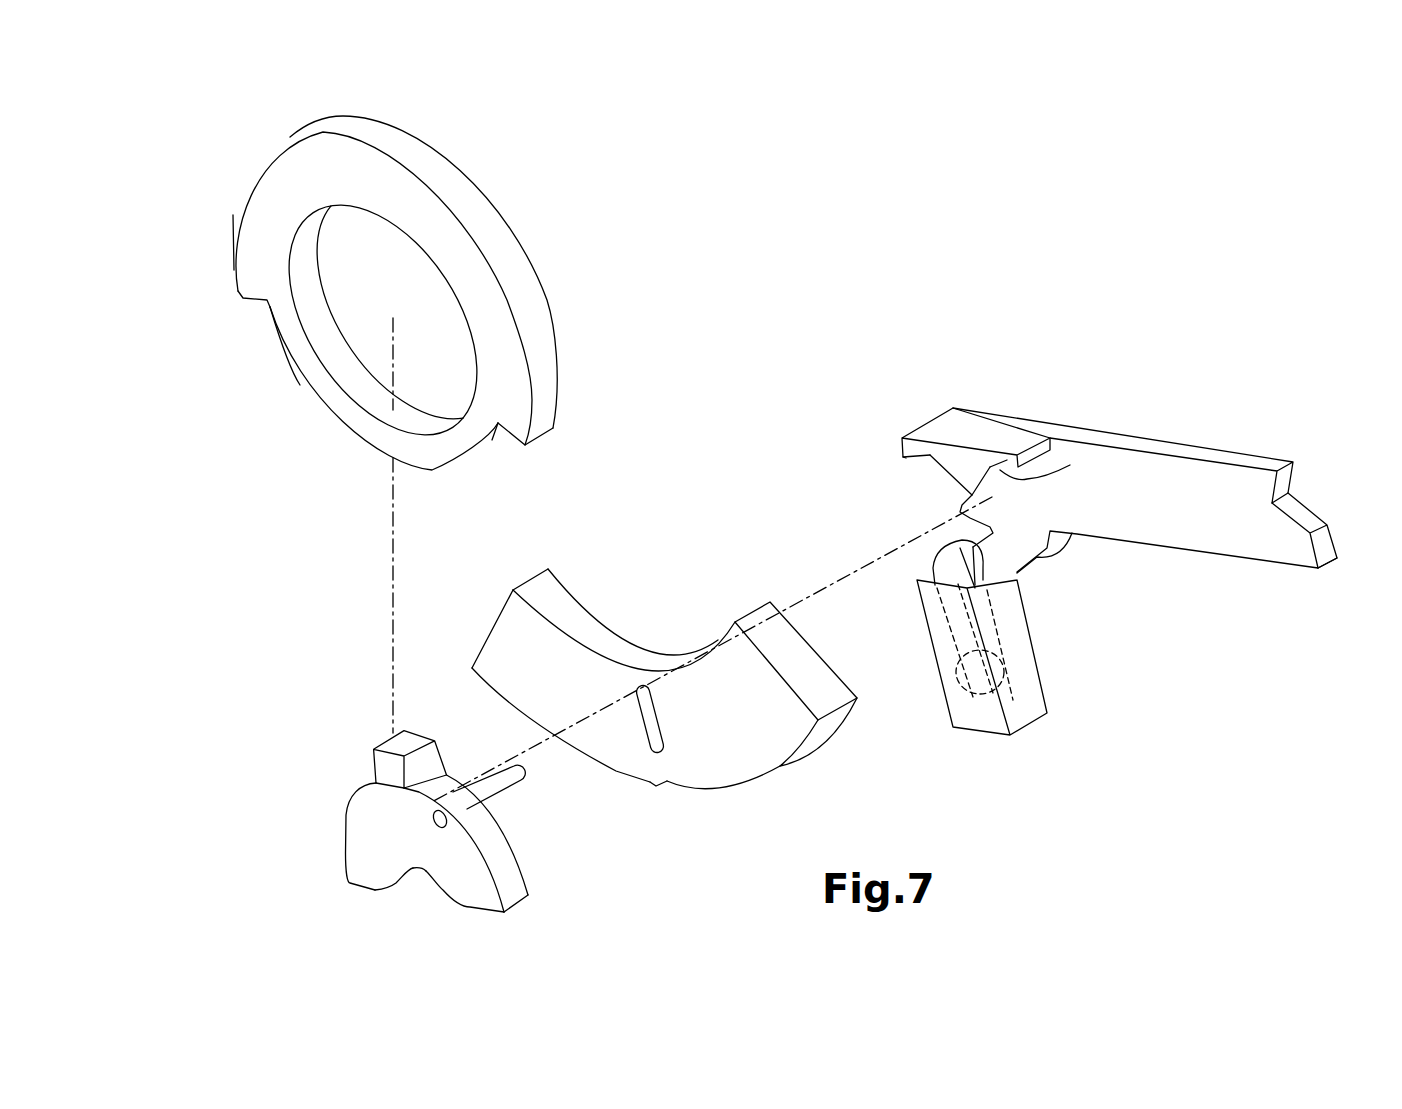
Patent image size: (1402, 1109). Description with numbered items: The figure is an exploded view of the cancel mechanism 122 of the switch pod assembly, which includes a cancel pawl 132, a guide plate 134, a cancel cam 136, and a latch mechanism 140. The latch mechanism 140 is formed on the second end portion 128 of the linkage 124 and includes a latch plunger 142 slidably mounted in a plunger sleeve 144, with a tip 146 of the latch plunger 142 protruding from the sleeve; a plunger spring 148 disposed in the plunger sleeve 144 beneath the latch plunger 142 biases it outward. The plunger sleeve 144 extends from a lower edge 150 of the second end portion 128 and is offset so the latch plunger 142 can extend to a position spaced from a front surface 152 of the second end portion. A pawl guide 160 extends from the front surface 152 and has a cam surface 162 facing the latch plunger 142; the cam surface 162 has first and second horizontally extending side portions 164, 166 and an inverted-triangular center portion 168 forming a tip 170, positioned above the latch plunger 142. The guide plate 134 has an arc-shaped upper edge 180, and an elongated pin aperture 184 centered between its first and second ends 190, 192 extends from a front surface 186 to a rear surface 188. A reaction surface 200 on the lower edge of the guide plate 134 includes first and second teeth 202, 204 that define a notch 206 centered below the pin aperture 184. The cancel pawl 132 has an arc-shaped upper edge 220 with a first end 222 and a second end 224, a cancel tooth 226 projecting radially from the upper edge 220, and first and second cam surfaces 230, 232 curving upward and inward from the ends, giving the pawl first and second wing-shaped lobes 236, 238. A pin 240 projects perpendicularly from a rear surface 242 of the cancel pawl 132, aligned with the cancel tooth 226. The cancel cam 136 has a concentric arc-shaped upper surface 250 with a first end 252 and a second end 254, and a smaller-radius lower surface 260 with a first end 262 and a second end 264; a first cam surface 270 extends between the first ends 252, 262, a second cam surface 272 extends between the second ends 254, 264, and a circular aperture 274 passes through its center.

The cancel mechanism 122 is at (1212, 728).
The linkage 124 is at (1220, 488).
The second end portion 128 is at (1250, 495).
The cancel pawl 132 is at (545, 928).
The guide plate 134 is at (458, 612).
The cancel cam 136 is at (198, 162).
The latch mechanism 140 is at (1240, 643).
The latch plunger 142 is at (975, 588).
The plunger sleeve 144 is at (1027, 665).
The tip 146 is at (957, 553).
The plunger spring 148 is at (1047, 713).
The lower edge 150 is at (1213, 553).
The front surface 152 is at (1175, 480).
The pawl guide 160 is at (968, 425).
The cam surface 162 is at (1000, 478).
The first side portion 164 is at (1025, 478).
The second side portion 166 is at (905, 457).
The center portion 168 is at (965, 475).
The tip 170 is at (990, 495).
The upper edge 180 is at (579, 625).
The pin aperture 184 is at (660, 725).
The front surface 186 is at (530, 644).
The rear surface 188 is at (658, 641).
The first end 190 is at (762, 636).
The second end 192 is at (494, 608).
The reaction surface 200 is at (656, 818).
The first tooth 202 is at (691, 786).
The second tooth 204 is at (653, 781).
The notch 206 is at (667, 783).
The upper edge 220 is at (487, 836).
The first end 222 is at (518, 895).
The second end 224 is at (348, 880).
The cancel tooth 226 is at (389, 741).
The first cam surface 230 is at (490, 914).
The second cam surface 232 is at (416, 868).
The first lobe 236 is at (475, 876).
The second lobe 238 is at (372, 863).
The pin 240 is at (494, 787).
The rear surface 242 is at (514, 848).
The upper surface 250 is at (472, 208).
The first end 252 is at (548, 425).
The second end 254 is at (240, 278).
The lower surface 260 is at (340, 420).
The first end 262 is at (493, 436).
The second end 264 is at (268, 306).
The first cam surface 270 is at (507, 440).
The second cam surface 272 is at (245, 304).
The circular aperture 274 is at (362, 276).